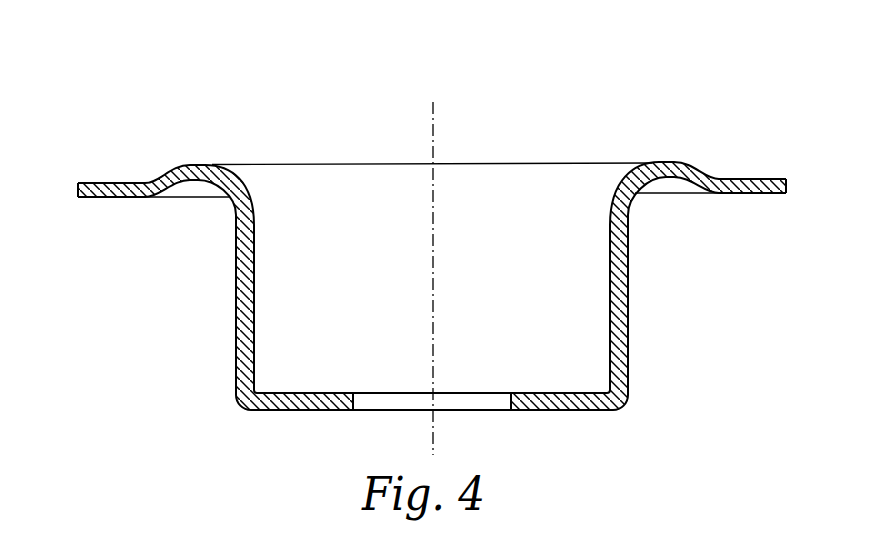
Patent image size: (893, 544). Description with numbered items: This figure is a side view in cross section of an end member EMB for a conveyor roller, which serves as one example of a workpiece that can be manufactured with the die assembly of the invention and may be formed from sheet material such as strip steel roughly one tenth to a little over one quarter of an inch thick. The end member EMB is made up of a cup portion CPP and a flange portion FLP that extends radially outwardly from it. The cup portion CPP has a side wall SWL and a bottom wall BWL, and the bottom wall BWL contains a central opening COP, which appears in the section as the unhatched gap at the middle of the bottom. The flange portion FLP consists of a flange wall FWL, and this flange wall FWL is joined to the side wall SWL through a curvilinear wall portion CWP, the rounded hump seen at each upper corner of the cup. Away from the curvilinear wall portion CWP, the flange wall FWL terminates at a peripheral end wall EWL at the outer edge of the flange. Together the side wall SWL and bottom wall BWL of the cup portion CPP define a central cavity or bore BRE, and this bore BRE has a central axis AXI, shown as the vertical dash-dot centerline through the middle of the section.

The end member EMB is at (368, 130).
The bore BRE is at (525, 207).
The flange portion FLP is at (743, 170).
The flange wall FWL is at (121, 182).
The curvilinear wall portion CWP is at (237, 176).
The peripheral end wall EWL is at (79, 191).
The central axis AXI is at (433, 257).
The side wall SWL is at (254, 290).
The cup portion CPP is at (220, 325).
The central opening COP is at (448, 400).
The bottom wall BWL is at (302, 411).